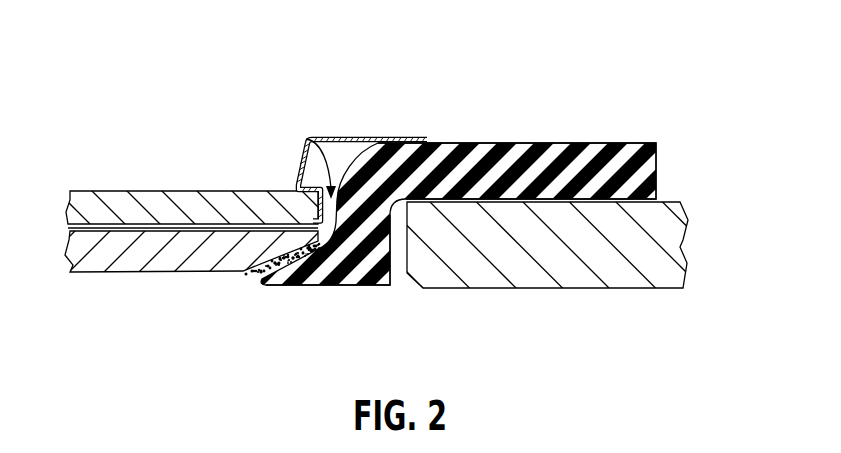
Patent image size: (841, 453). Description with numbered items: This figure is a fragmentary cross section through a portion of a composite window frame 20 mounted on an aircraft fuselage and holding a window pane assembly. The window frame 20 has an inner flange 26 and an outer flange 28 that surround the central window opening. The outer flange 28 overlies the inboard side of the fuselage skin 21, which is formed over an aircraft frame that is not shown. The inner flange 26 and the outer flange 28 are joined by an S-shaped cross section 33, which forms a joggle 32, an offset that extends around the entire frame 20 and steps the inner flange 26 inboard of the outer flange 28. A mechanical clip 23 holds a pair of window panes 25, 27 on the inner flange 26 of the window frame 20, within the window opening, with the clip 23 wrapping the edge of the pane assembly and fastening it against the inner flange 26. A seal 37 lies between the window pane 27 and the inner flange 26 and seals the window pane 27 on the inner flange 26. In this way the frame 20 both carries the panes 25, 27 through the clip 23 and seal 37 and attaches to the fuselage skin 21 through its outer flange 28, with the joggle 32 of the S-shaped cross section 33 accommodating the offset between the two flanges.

The window frame 20 is at (668, 70).
The fuselage skin 21 is at (653, 247).
The mechanical clip 23 is at (378, 136).
The window pane 25 is at (148, 211).
The inner flange 26 is at (327, 273).
The window pane 27 is at (107, 258).
The outer flange 28 is at (544, 157).
The joggle 32 is at (306, 139).
The S-shaped cross section 33 is at (372, 263).
The seal 37 is at (244, 278).